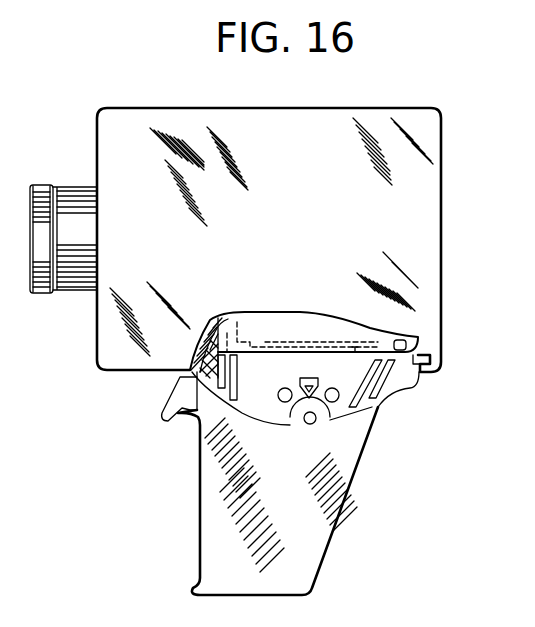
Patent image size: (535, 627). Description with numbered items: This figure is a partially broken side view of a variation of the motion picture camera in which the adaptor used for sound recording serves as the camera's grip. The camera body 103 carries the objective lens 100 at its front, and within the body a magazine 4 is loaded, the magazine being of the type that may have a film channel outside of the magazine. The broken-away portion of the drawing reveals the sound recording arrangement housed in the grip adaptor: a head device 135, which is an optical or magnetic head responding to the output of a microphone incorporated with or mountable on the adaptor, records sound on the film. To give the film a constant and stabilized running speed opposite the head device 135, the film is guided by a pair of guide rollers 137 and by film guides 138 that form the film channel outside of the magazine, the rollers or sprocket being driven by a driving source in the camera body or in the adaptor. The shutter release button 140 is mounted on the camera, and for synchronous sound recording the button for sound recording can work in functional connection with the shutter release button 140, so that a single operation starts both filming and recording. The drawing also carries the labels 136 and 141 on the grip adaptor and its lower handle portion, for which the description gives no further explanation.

The magazine 4 is at (333, 332).
The objective lens 100 is at (77, 208).
The camera body 103 is at (408, 175).
The head device 135 is at (310, 378).
The trigger guard 136 is at (372, 410).
The guide rollers 137 is at (288, 418).
The film guides 138 is at (238, 377).
The shutter release button 140 is at (167, 403).
The handle grip 141 is at (333, 455).